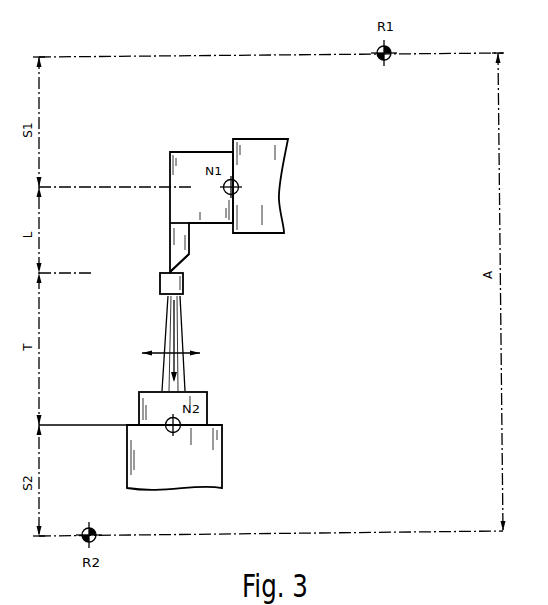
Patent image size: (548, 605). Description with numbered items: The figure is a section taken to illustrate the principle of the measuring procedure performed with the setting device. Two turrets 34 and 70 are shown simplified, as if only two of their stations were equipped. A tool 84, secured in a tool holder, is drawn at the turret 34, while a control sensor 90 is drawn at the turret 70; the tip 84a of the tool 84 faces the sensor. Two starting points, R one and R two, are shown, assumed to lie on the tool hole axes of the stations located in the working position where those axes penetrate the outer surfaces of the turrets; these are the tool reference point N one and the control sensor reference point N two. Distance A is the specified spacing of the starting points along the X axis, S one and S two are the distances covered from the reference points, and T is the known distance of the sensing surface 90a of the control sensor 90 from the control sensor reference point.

The tool 84 is at (182, 173).
The beveled tip of positioning block 84a is at (168, 272).
The turret 34 is at (283, 234).
The control sensor 90 is at (182, 343).
The sensing surface 90a is at (188, 267).
The turret 70 is at (222, 448).